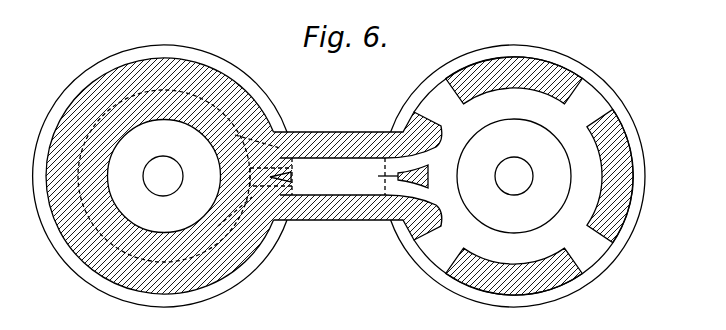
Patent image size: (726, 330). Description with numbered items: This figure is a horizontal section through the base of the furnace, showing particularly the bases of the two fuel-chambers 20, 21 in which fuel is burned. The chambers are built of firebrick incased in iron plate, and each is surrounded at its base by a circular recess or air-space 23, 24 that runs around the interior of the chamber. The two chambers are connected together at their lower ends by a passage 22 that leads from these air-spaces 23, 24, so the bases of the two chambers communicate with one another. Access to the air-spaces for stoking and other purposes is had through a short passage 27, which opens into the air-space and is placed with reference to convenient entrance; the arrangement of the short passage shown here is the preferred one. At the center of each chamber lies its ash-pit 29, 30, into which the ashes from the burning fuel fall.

The fuel-chamber 20 is at (419, 100).
The fuel-chamber 21 is at (88, 96).
The passage 22 is at (349, 176).
The air-space 23 is at (539, 176).
The air-space 24 is at (87, 135).
The short passage 27 is at (523, 176).
The ash-pit 29 is at (514, 176).
The ash-pit 30 is at (163, 176).